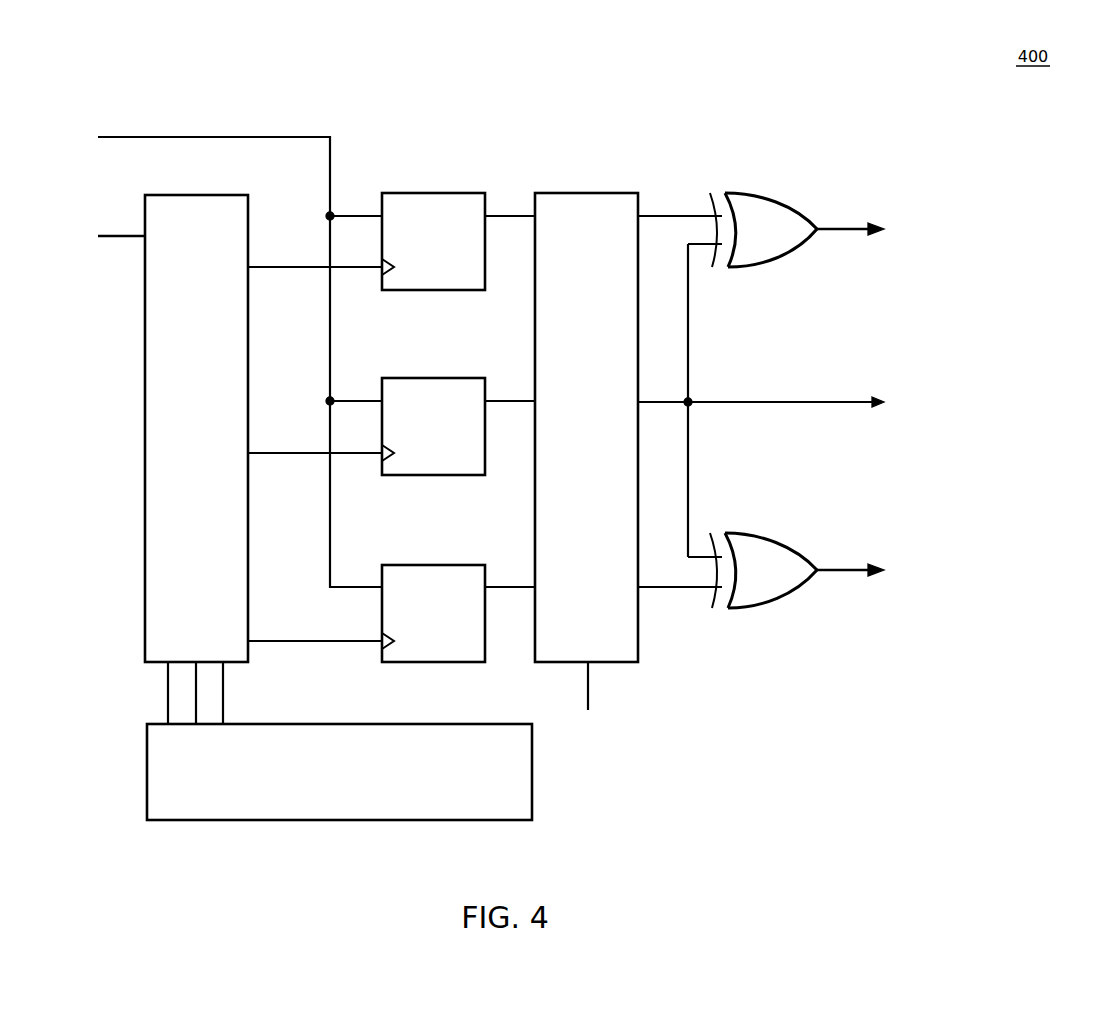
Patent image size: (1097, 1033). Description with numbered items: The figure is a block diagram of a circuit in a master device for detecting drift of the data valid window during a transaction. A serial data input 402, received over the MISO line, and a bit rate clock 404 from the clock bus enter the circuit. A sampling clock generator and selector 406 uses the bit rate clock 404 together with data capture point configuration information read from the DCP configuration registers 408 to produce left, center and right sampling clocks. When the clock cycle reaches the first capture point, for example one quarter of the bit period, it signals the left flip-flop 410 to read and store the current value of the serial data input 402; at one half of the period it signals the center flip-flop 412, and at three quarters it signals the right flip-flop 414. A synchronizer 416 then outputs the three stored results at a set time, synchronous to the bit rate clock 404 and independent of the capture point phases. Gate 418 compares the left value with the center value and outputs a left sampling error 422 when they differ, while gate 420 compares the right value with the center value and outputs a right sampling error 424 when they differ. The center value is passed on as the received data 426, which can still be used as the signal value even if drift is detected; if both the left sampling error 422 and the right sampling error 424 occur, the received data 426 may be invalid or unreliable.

The serial data input 402 is at (100, 125).
The bit rate clock 404 is at (100, 220).
The sampling clock generator and selector 406 is at (145, 370).
The DCP configuration registers 408 is at (145, 769).
The left flip-flop 410 is at (433, 192).
The center flip-flop 412 is at (434, 378).
The right flip-flop 414 is at (434, 565).
The synchronizer 416 is at (572, 192).
The gate 418 is at (745, 190).
The gate 420 is at (750, 534).
The left sampling error 422 is at (832, 229).
The right sampling error 424 is at (835, 562).
The received data 426 is at (744, 400).